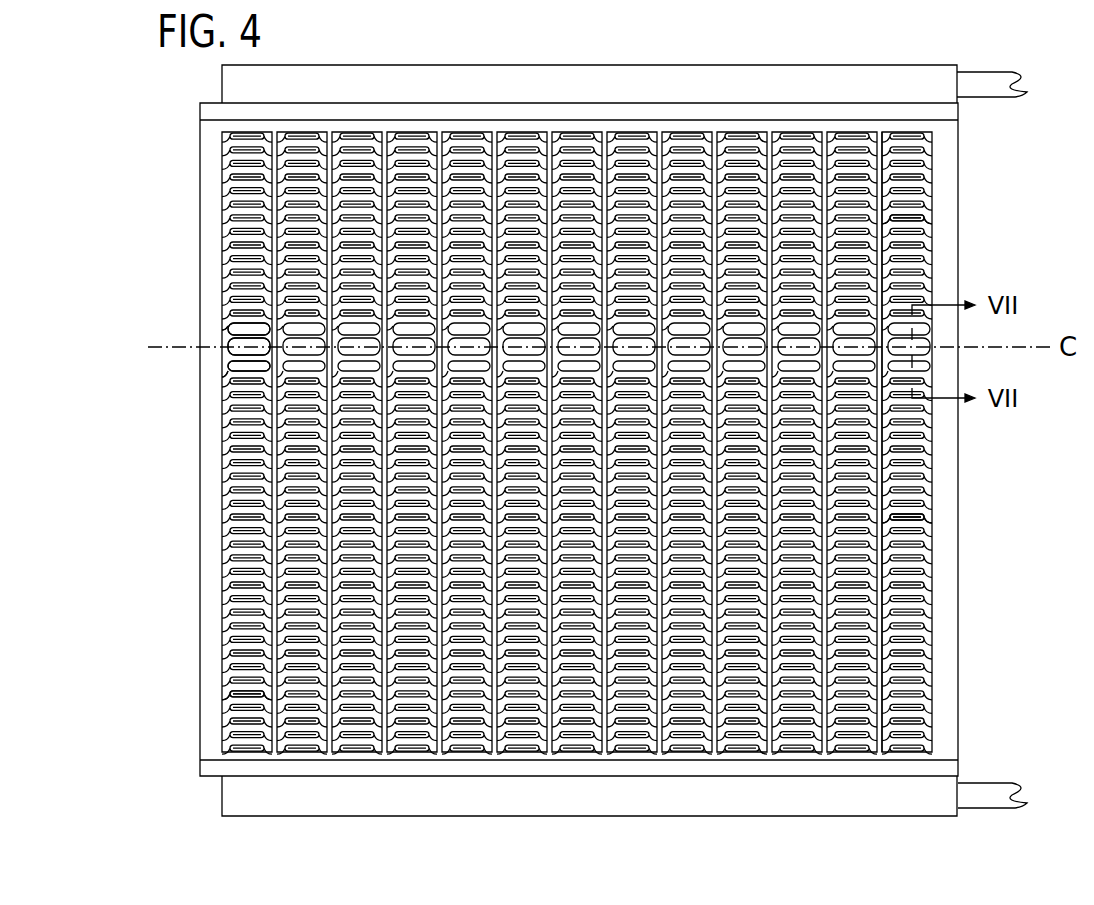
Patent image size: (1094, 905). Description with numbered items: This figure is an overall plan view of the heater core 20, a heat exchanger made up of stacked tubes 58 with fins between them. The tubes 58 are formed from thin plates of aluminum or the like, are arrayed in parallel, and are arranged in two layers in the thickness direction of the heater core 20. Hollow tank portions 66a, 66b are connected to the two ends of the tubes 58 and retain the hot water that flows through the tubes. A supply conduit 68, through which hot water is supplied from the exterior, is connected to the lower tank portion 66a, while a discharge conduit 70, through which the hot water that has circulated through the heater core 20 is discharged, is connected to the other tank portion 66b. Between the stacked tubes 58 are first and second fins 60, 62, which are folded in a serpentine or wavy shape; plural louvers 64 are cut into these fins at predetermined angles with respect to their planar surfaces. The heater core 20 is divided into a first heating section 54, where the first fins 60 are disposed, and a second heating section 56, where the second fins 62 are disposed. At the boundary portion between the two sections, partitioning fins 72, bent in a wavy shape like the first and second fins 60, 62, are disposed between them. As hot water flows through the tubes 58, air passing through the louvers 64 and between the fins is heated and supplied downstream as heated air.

The heater core 20 is at (920, 57).
The first heating section 54 is at (238, 698).
The second heating section 56 is at (925, 198).
The tubes 58 is at (885, 578).
The first fins 60 is at (920, 522).
The second fins 62 is at (919, 216).
The louvers 64 is at (232, 266).
The tank portion 66a is at (705, 800).
The tank portion 66b is at (511, 67).
The supply conduit 68 is at (985, 796).
The discharge conduit 70 is at (989, 93).
The partitioning fins 72 is at (232, 358).